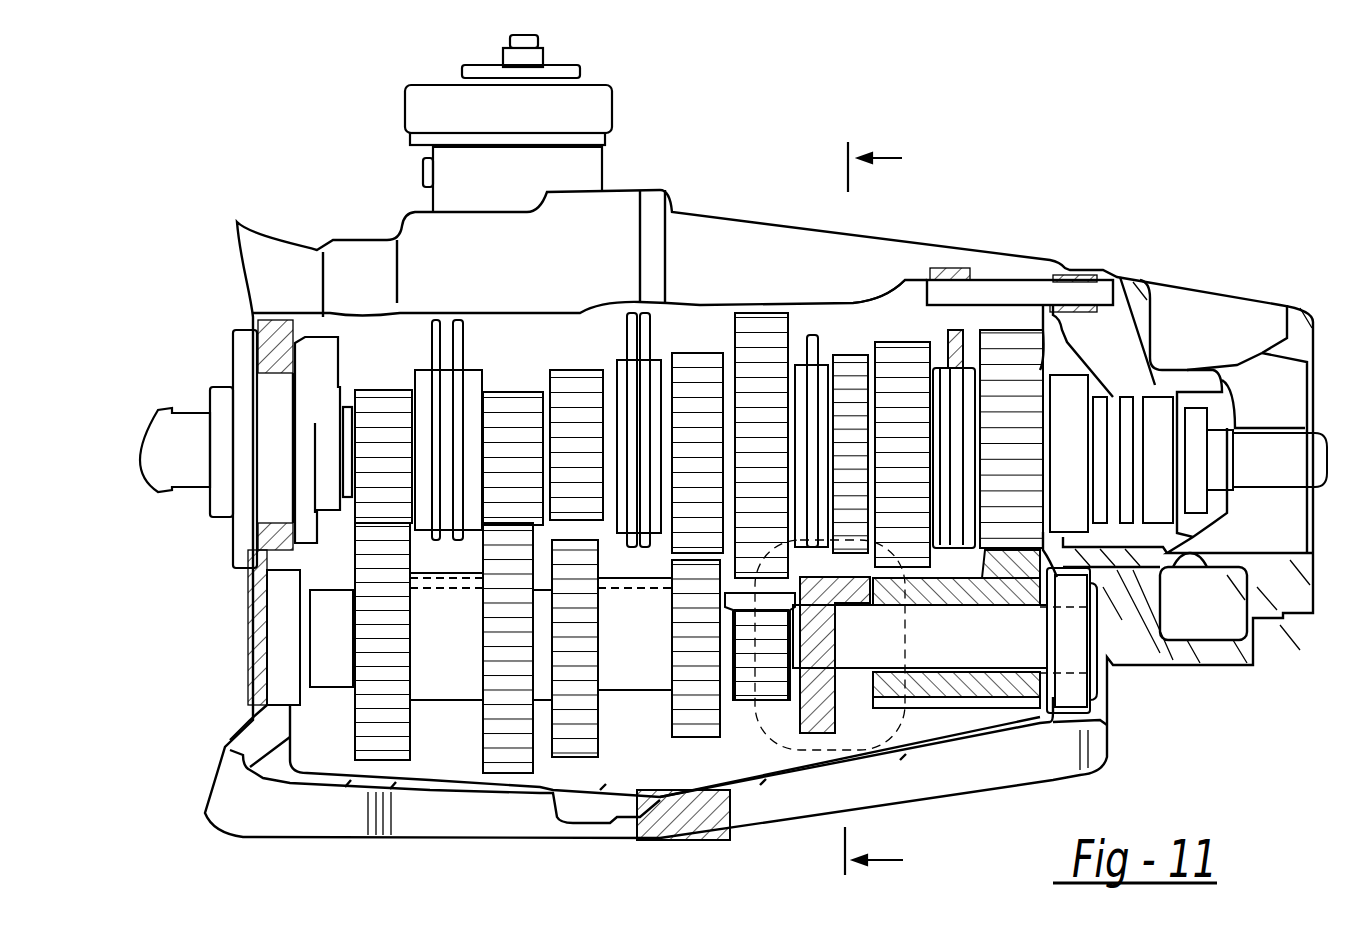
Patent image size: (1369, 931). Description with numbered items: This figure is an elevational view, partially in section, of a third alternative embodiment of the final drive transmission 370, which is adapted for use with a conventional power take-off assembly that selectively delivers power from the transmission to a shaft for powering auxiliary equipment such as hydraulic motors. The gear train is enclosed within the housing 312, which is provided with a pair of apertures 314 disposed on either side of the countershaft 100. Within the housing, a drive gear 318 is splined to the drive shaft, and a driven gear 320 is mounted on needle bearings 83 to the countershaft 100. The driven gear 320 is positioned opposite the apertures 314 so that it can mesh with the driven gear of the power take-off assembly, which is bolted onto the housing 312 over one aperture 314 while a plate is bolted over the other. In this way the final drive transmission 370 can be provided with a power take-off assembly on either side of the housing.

The final drive transmission 370 is at (739, 460).
The housing 312 is at (878, 248).
The drive gear 318 is at (843, 362).
The needle bearings 83 is at (810, 603).
The driven gear 320 is at (866, 658).
The countershaft 100 is at (1035, 652).
The aperture 314 is at (790, 735).